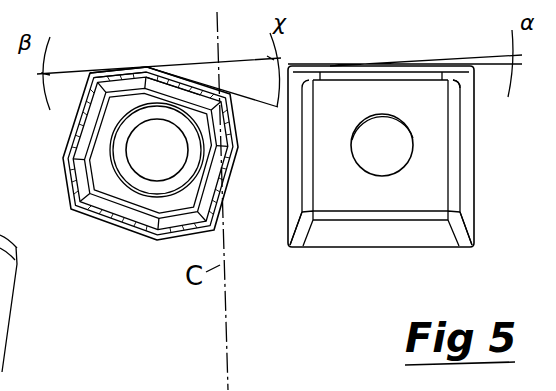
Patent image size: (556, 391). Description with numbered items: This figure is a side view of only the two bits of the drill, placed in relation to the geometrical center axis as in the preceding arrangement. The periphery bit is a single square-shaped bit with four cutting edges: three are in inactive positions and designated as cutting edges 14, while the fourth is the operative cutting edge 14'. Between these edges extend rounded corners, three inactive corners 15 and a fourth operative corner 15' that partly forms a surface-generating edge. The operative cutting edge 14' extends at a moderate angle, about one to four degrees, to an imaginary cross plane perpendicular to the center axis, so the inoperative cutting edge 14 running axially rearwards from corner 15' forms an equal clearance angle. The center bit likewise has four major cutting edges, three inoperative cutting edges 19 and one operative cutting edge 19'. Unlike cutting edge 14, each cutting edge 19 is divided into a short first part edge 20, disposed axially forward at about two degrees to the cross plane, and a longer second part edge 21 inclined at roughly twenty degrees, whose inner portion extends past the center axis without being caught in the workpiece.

The inactive cutting edge 14 is at (390, 184).
The operative cutting edge 14' is at (405, 37).
The inactive rounded corner 15 is at (397, 146).
The operative corner 15' is at (480, 44).
The inoperative major cutting edge 19 is at (134, 182).
The operative major cutting edge 19' is at (166, 48).
The first part edge 20 is at (115, 69).
The second part edge 21 is at (192, 80).